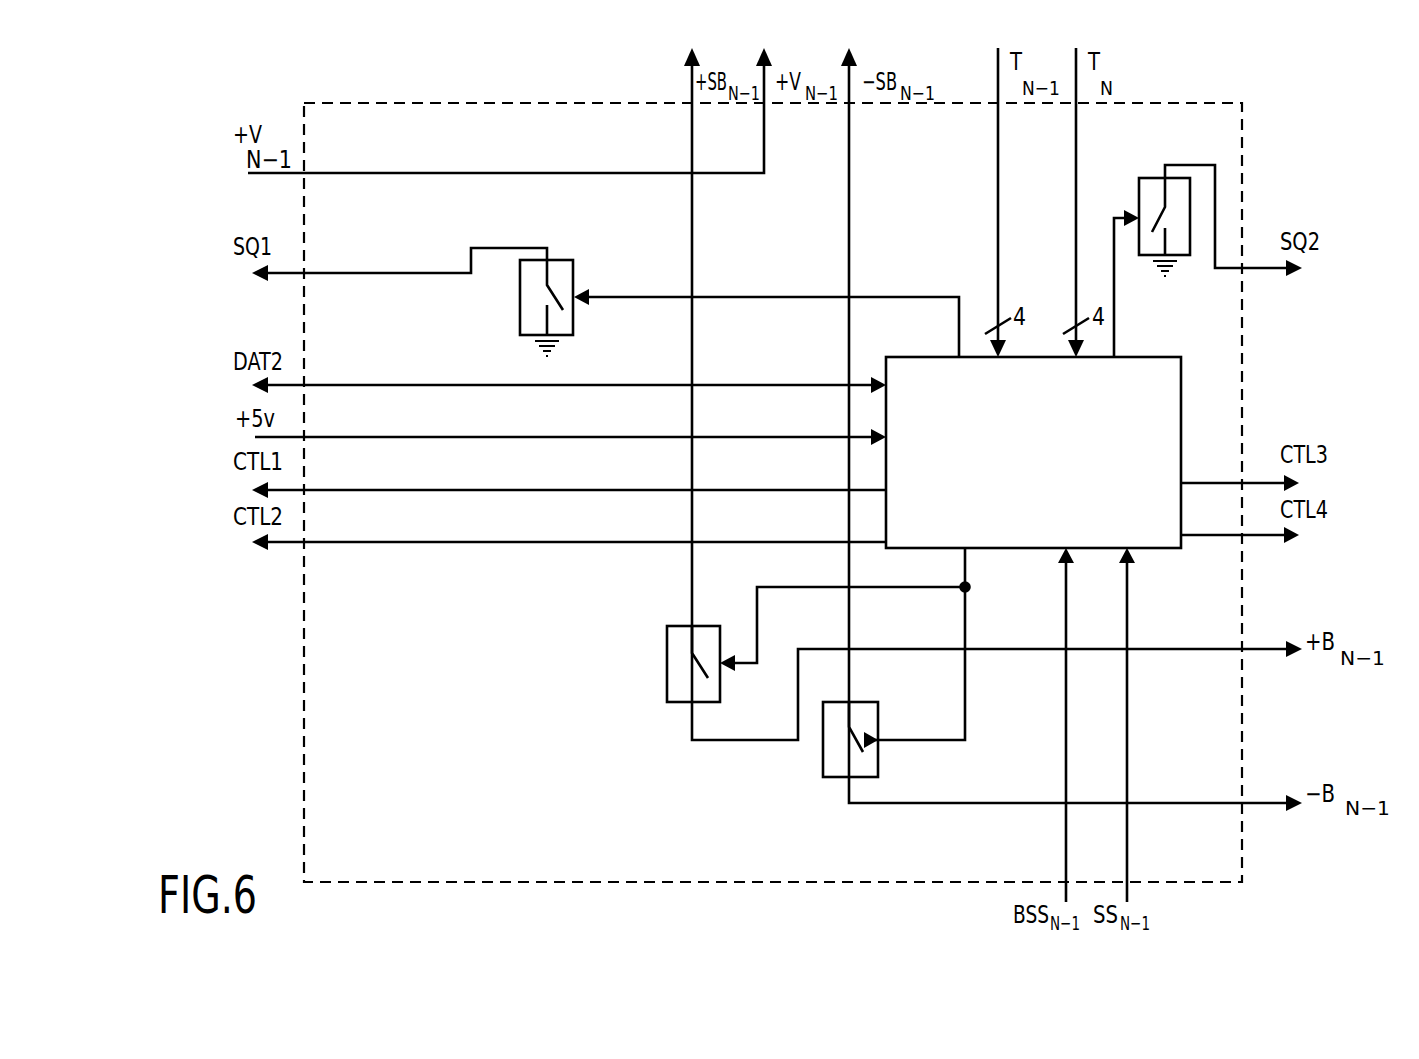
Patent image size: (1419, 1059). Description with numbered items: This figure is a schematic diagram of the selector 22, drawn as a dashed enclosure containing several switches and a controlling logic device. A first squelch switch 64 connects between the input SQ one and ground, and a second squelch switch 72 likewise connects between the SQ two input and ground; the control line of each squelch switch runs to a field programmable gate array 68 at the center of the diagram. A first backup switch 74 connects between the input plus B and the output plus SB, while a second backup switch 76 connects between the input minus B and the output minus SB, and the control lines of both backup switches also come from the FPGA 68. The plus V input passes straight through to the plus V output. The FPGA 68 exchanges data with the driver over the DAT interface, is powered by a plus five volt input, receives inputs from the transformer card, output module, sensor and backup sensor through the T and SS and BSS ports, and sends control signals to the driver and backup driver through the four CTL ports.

The selector 22 is at (527, 145).
The squelch 1 switch 64 is at (481, 308).
The field programmable gate array 68 is at (1047, 485).
The squelch 2 switch 72 is at (1145, 207).
The backup 1 switch 74 is at (652, 646).
The backup 2 switch 76 is at (891, 726).